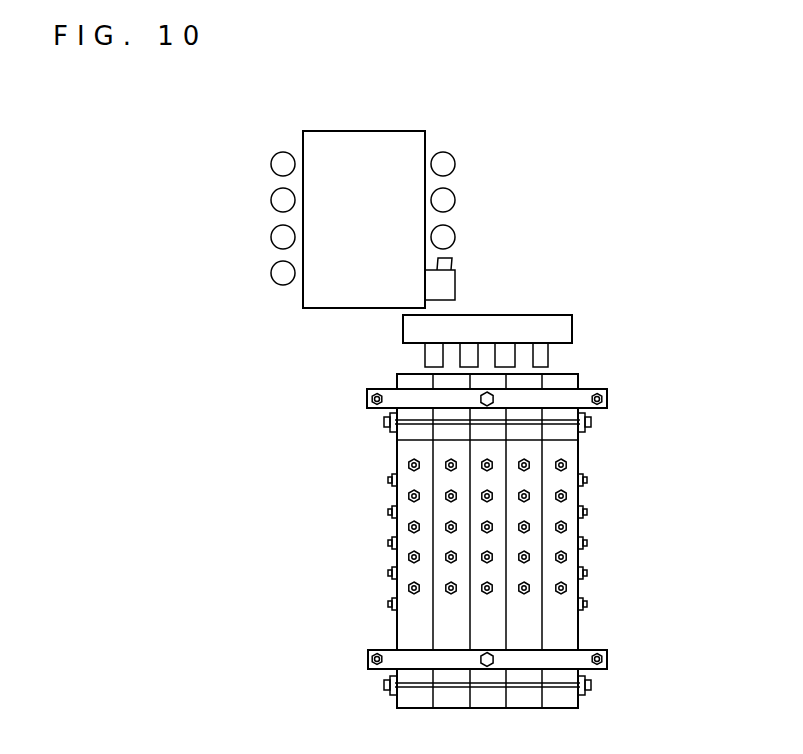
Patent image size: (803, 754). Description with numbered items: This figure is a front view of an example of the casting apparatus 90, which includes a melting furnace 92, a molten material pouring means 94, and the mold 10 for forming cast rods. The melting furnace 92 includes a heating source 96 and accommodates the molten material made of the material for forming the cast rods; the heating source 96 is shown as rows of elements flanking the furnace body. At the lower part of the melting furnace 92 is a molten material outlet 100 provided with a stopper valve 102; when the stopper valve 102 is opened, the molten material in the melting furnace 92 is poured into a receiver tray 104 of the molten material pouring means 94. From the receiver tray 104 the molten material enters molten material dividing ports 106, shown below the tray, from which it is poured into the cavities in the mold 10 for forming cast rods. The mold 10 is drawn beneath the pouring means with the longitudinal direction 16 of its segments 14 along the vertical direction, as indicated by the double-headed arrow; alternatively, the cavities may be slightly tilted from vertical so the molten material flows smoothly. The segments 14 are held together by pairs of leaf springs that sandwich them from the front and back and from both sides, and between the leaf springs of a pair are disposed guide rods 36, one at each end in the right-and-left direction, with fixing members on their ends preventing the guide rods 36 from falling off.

The mold for forming cast rods 10 is at (628, 370).
The segments 14 is at (560, 708).
The longitudinal direction 16 is at (692, 510).
The guide rod 36 is at (553, 428).
The casting apparatus 90 is at (545, 158).
The melting furnace 92 is at (425, 140).
The molten material pouring means 94 is at (645, 260).
The heating source 96 is at (271, 165).
The molten material outlet 100 is at (452, 292).
The stopper valve 102 is at (448, 262).
The receiver tray 104 is at (553, 316).
The molten material dividing ports 106 is at (548, 358).